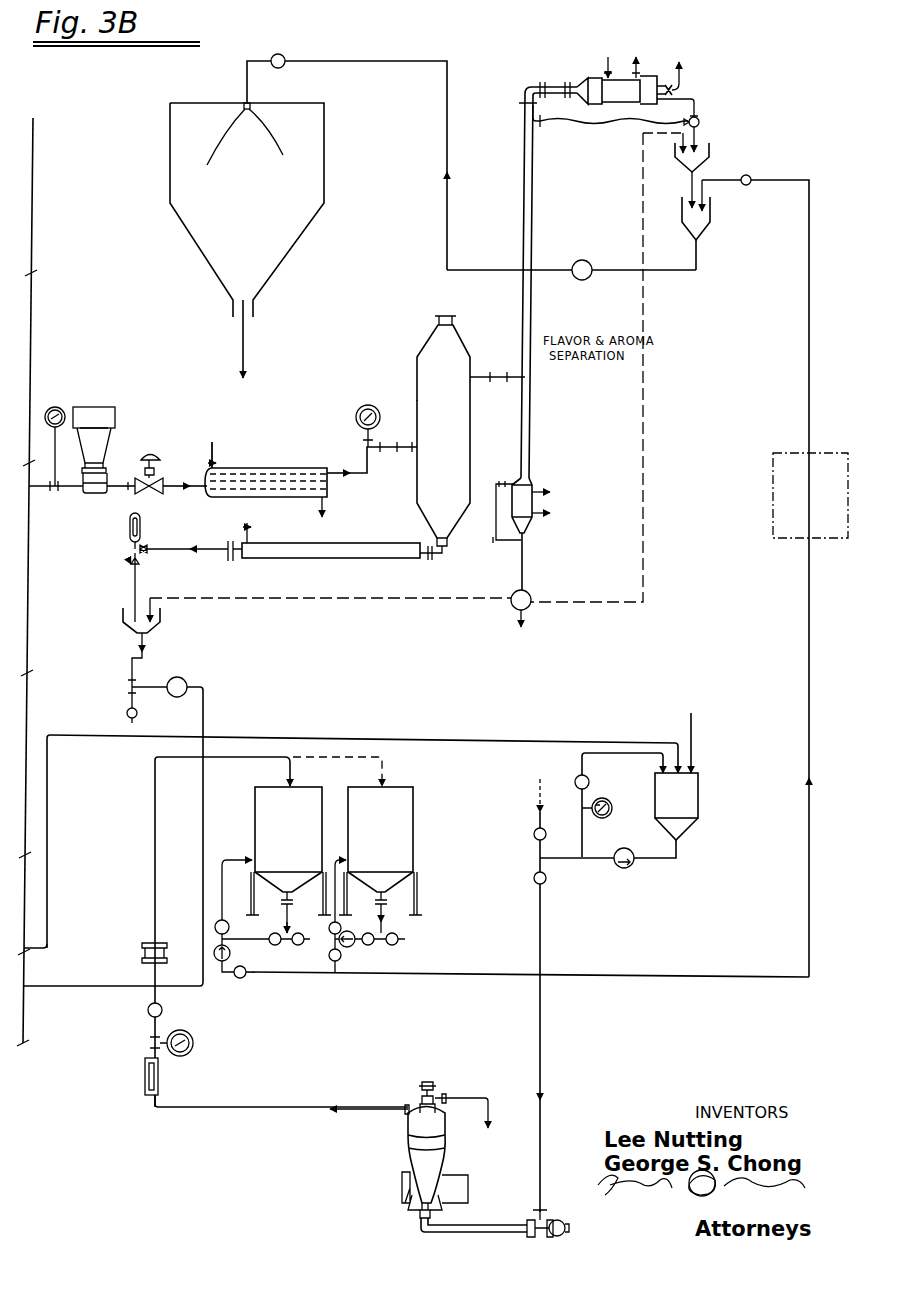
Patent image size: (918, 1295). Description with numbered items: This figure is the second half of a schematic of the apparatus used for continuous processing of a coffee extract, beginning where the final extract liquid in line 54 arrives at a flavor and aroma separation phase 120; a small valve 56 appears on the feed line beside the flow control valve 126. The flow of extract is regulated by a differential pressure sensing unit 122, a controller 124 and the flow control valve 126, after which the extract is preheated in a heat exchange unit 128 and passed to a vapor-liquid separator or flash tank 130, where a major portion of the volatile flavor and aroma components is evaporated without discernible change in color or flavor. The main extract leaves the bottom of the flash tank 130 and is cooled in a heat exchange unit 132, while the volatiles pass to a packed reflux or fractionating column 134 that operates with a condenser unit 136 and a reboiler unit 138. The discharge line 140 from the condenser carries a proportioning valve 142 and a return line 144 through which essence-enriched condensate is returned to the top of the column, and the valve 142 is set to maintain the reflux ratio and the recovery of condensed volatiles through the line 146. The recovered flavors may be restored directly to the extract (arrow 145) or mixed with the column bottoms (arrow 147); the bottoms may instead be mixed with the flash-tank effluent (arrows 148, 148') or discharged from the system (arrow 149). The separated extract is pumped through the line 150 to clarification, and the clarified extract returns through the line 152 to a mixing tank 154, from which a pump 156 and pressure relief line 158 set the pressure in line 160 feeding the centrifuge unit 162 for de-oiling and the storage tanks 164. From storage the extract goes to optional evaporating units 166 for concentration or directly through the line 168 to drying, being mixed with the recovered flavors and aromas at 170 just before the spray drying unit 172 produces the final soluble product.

The line 54 is at (34, 505).
The valve 56 is at (130, 490).
The flavor and aroma separation phase 120 is at (380, 376).
The differential pressure sensing unit 122 is at (93, 494).
The controller 124 is at (113, 418).
The flow control valve 126 is at (157, 457).
The heat exchange unit 128 is at (290, 468).
The vapor-liquid separator or flash tank 130 is at (421, 356).
The heat exchange unit 132 is at (345, 562).
The packed reflux or fractionating column 134 is at (531, 227).
The condenser unit 136 is at (598, 78).
The reboiler unit 138 is at (531, 528).
The discharge line 140 is at (683, 97).
The proportioning valve 142 is at (700, 118).
The return line 144 is at (577, 125).
The arrow 145 is at (702, 135).
The line 146 is at (685, 182).
The arrow 147 is at (645, 441).
The arrow 148 is at (330, 612).
The arrow 148' is at (119, 618).
The arrow 149 is at (531, 607).
The line 150 is at (208, 705).
The line 152 is at (50, 810).
The mixing tank 154 is at (700, 795).
The pump 156 is at (631, 870).
The pressure relief line 158 is at (590, 768).
The line 160 is at (541, 961).
The centrifuge unit 162 is at (447, 1147).
The storage tanks 164 is at (256, 811).
The evaporating units 166 is at (833, 452).
The line 168 is at (811, 322).
The mixing point 170 is at (712, 222).
The spray drying unit 172 is at (325, 160).